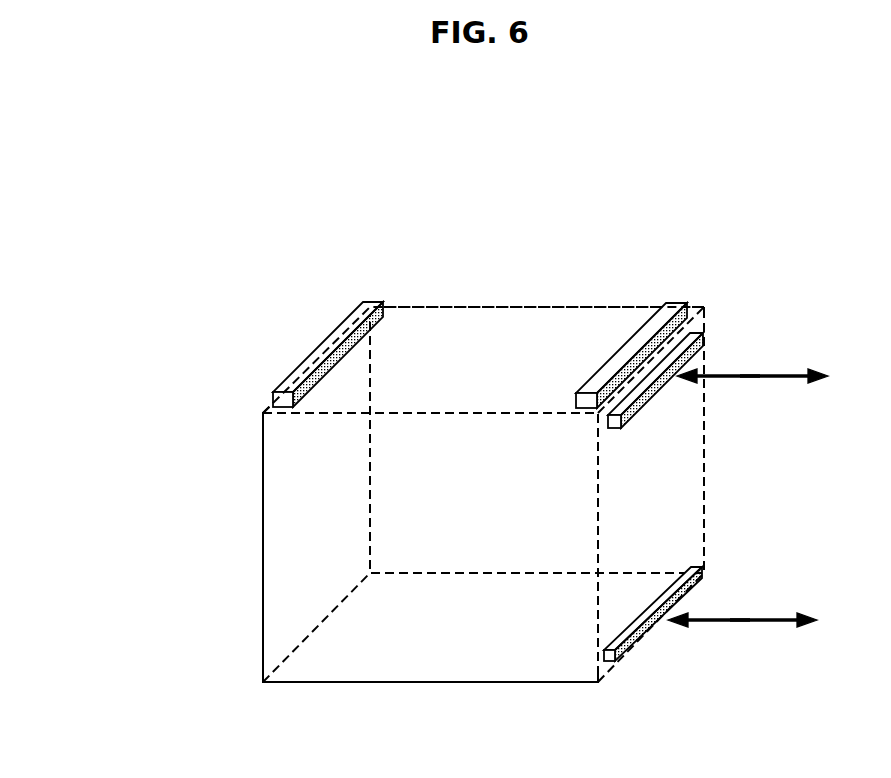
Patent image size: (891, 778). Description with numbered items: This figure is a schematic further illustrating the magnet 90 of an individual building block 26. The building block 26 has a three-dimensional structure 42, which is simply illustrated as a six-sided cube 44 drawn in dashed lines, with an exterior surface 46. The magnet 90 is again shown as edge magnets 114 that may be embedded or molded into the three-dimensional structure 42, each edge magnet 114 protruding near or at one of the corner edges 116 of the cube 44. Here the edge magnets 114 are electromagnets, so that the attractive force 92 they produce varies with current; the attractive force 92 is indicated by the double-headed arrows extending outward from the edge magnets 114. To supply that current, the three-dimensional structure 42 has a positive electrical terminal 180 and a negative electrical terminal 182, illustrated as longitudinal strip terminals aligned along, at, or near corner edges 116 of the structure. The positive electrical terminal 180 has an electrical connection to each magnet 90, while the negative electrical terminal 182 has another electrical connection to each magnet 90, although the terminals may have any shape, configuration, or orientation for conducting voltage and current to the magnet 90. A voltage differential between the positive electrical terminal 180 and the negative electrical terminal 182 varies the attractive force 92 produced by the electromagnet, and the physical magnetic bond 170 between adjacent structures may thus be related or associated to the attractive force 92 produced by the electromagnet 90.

The building block 26 is at (170, 260).
The three-dimensional structure 42 is at (263, 588).
The six-sided cube 44 is at (263, 682).
The exterior surface 46 is at (432, 333).
The magnet 90 is at (705, 340).
The attractive force 92 is at (775, 379).
The edge magnet 114 is at (637, 643).
The corner edge 116 is at (265, 413).
The magnetic bond 170 is at (798, 372).
The positive electrical terminal 180 is at (366, 308).
The negative electrical terminal 182 is at (655, 312).